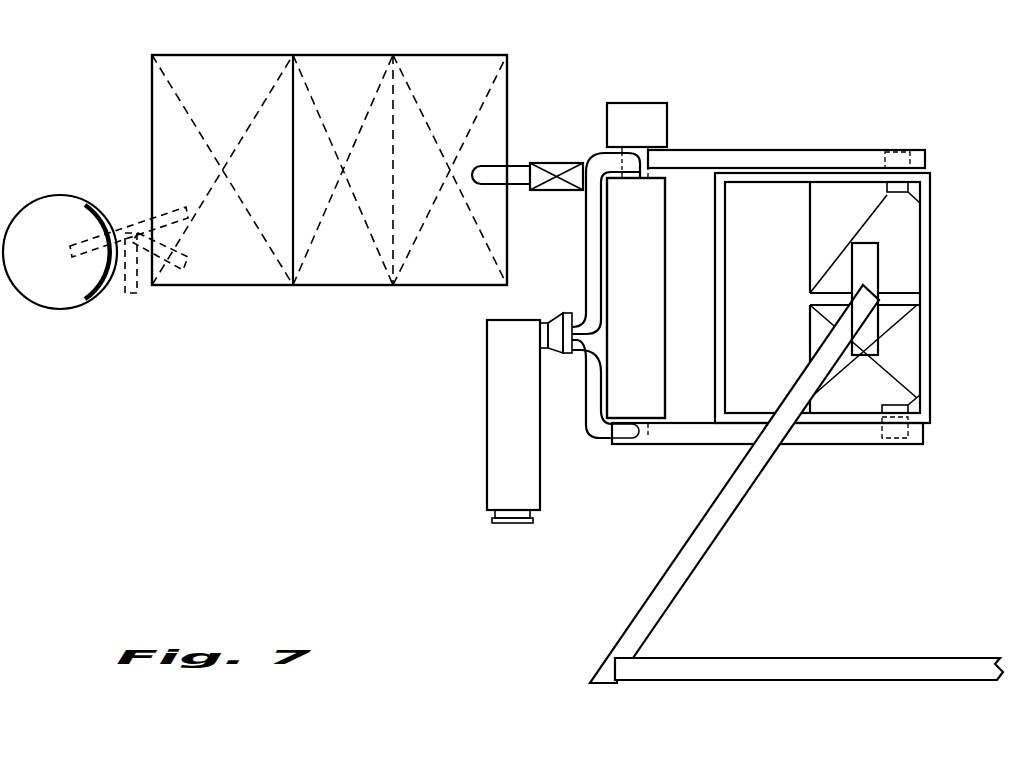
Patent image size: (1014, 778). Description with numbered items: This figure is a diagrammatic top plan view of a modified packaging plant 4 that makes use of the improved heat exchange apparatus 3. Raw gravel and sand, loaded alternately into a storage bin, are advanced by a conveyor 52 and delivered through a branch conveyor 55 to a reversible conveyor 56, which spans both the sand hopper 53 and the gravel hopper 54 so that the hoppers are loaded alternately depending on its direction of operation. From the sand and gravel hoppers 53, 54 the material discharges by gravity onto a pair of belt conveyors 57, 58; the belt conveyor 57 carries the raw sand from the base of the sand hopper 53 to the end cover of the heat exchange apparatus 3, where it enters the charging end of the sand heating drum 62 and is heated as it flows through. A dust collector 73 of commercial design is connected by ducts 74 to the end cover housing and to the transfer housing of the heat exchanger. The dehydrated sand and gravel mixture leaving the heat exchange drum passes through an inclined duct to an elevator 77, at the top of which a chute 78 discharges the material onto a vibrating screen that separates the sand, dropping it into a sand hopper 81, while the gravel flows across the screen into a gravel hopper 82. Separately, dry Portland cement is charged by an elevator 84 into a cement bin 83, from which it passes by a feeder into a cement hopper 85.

The heat exchange apparatus 3 is at (653, 298).
The packaging plant 4 is at (470, 52).
The conveyor 52 is at (815, 664).
The sand hopper 53 is at (910, 278).
The gravel hopper 54 is at (912, 352).
The branch conveyor 55 is at (708, 531).
The reversible conveyor 56 is at (868, 339).
The belt conveyor 57 is at (765, 157).
The belt conveyor 58 is at (687, 433).
The sand heating drum 62 is at (645, 255).
The dust collector 73 is at (498, 422).
The ducts 74 is at (586, 270).
The elevator 77 is at (557, 168).
The chute 78 is at (500, 149).
The sand hopper 81 is at (458, 33).
The gravel hopper 82 is at (362, 38).
The cement bin 83 is at (47, 293).
The elevator 84 is at (137, 233).
The cement hopper 85 is at (231, 38).